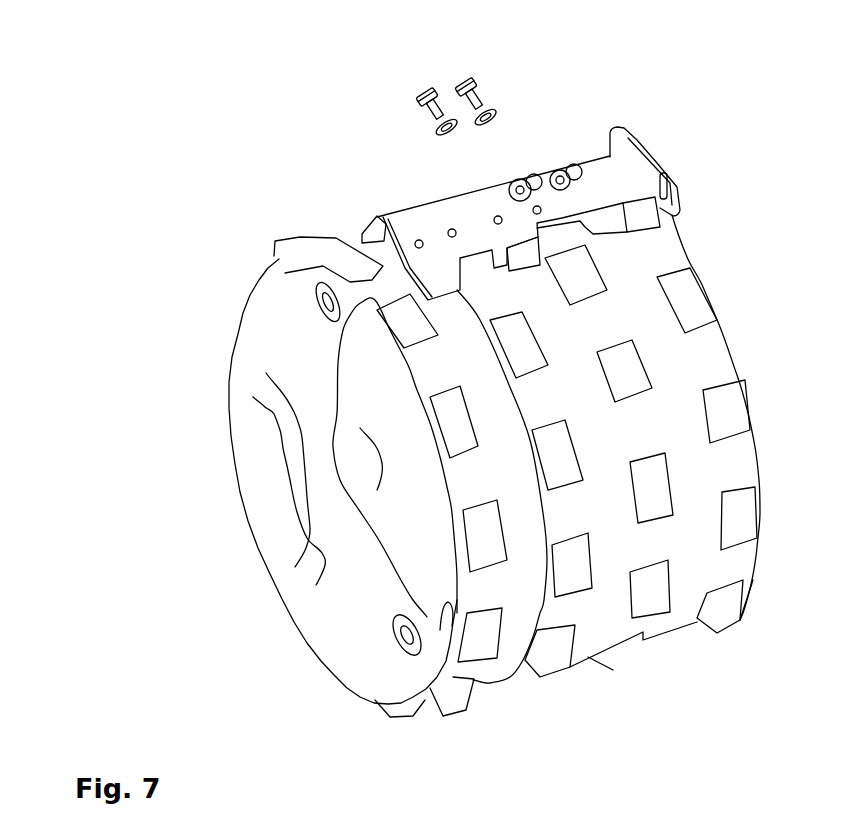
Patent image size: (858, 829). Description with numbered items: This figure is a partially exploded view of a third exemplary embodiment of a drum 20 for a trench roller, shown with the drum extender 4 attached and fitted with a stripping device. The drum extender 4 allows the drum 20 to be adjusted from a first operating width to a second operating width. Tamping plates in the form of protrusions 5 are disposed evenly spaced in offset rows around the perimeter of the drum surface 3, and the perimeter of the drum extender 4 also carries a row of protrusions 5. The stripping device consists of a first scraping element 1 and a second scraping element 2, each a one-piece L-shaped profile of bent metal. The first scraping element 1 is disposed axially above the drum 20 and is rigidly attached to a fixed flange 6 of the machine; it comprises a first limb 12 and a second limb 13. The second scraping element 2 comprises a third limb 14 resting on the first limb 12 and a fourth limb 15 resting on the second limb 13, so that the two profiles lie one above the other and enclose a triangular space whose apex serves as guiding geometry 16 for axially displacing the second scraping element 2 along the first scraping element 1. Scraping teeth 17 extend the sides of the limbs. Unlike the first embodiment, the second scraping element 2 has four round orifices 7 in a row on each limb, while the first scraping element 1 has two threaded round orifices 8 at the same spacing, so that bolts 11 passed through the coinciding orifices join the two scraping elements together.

The drum 20 is at (176, 137).
The first scraping element 1 is at (620, 182).
The second scraping element 2 is at (407, 220).
The drum surface 3 is at (672, 263).
The drum extender 4 is at (322, 268).
The protrusions 5 is at (698, 308).
The flange 6 is at (662, 163).
The round orifices 7 is at (452, 229).
The round orifices 8 is at (498, 216).
The bolts 11 is at (462, 83).
The first limb 12 is at (595, 180).
The second limb 13 is at (583, 150).
The third limb 14 is at (430, 220).
The fourth limb 15 is at (430, 197).
The guiding geometry 16 is at (378, 217).
The scraping teeth 17 is at (440, 268).